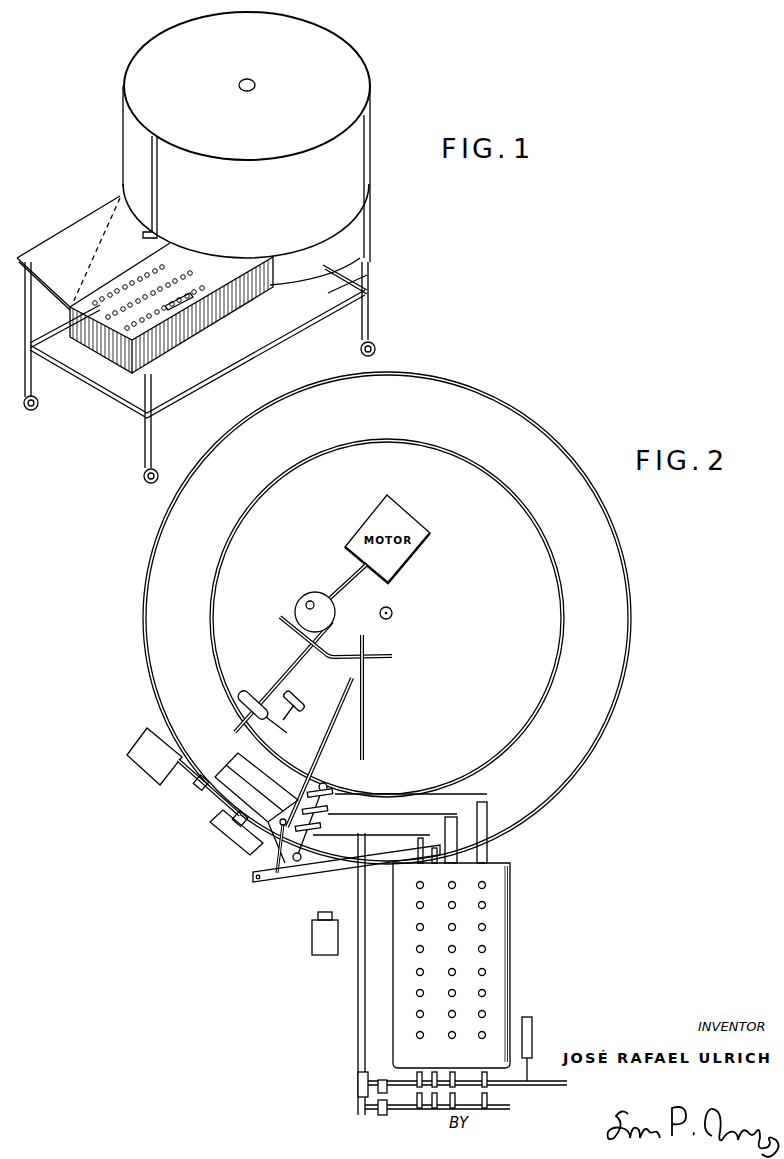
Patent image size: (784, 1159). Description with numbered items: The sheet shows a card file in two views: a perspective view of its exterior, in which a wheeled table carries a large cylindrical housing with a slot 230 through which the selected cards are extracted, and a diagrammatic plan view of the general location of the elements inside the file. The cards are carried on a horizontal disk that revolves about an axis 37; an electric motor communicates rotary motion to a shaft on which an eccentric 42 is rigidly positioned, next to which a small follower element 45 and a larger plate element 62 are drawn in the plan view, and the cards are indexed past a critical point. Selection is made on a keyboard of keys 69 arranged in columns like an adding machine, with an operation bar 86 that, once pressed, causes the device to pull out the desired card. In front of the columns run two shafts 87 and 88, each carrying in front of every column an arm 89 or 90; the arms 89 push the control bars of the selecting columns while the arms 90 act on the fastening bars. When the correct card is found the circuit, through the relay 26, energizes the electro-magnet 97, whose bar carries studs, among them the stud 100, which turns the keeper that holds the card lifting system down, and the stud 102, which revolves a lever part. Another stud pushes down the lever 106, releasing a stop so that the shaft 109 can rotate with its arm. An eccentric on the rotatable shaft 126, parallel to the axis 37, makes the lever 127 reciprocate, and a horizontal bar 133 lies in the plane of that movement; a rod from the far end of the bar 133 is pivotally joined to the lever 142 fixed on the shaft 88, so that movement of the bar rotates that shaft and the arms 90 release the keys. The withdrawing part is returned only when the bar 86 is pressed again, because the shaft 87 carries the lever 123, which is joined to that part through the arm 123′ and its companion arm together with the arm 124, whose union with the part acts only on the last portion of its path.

In FIG. 1, the slot 230 is at (158, 192).
In FIG. 1, the keys 69 is at (203, 278).
In FIG. 2, the keys 69 is at (486, 927).
In FIG. 1, the operation bar 86 is at (191, 299).
In FIG. 2, the operation bar 86 is at (533, 1036).
In FIG. 2, the rotatable shaft 126 is at (322, 596).
In FIG. 2, the axis 37 is at (394, 611).
In FIG. 2, the lever 127 is at (383, 662).
In FIG. 2, the shaft 109 is at (341, 712).
In FIG. 2, the eccentric 42 is at (245, 690).
In FIG. 2, the follower 45 is at (290, 716).
In FIG. 2, the electro-magnet 97 is at (140, 766).
In FIG. 2, the stud 100 is at (200, 779).
In FIG. 2, the carriage plate 62 is at (262, 779).
In FIG. 2, the stud 102 is at (243, 817).
In FIG. 2, the lever 106 is at (222, 840).
In FIG. 2, the arm 124 is at (275, 849).
In FIG. 2, the relay 26 is at (312, 940).
In FIG. 2, the bar 133 is at (358, 1020).
In FIG. 2, the shaft 87 is at (535, 1086).
In FIG. 2, the shaft 88 is at (493, 1109).
In FIG. 2, the lever 142 is at (358, 1103).
In FIG. 2, the arms 89 is at (489, 1077).
In FIG. 2, the arms 90 is at (489, 1097).
In FIG. 2, the arm 123′ is at (438, 1072).
In FIG. 2, the lever 123 is at (437, 1088).